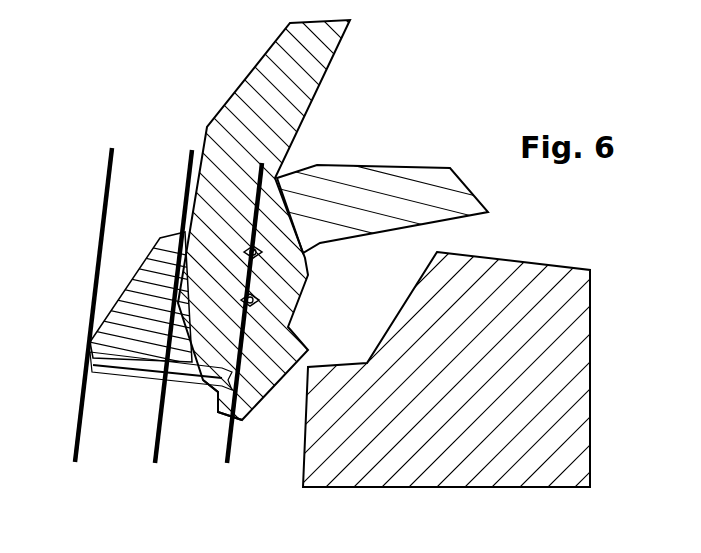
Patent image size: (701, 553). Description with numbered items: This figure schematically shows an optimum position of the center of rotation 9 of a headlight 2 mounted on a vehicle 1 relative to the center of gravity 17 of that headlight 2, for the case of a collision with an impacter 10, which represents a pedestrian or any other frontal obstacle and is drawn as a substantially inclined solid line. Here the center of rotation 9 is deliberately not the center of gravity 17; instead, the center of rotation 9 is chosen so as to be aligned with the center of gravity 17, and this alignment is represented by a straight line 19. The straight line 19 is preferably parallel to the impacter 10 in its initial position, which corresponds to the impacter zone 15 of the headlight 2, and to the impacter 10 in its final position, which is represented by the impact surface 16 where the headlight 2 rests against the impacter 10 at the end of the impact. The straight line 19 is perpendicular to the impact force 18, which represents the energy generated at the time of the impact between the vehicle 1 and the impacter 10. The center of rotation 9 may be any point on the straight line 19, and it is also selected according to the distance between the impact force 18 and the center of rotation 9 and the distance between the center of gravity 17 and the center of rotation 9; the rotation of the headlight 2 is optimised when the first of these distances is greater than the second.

The vehicle 1 is at (533, 377).
The headlight 2 is at (287, 82).
The center of rotation 9 is at (262, 301).
The impacter 10 is at (77, 448).
The impacter zone 15 is at (86, 342).
The impact surface 16 is at (173, 303).
The center of gravity 17 is at (246, 252).
The impact force 18 is at (193, 384).
The straight line 19 is at (227, 453).